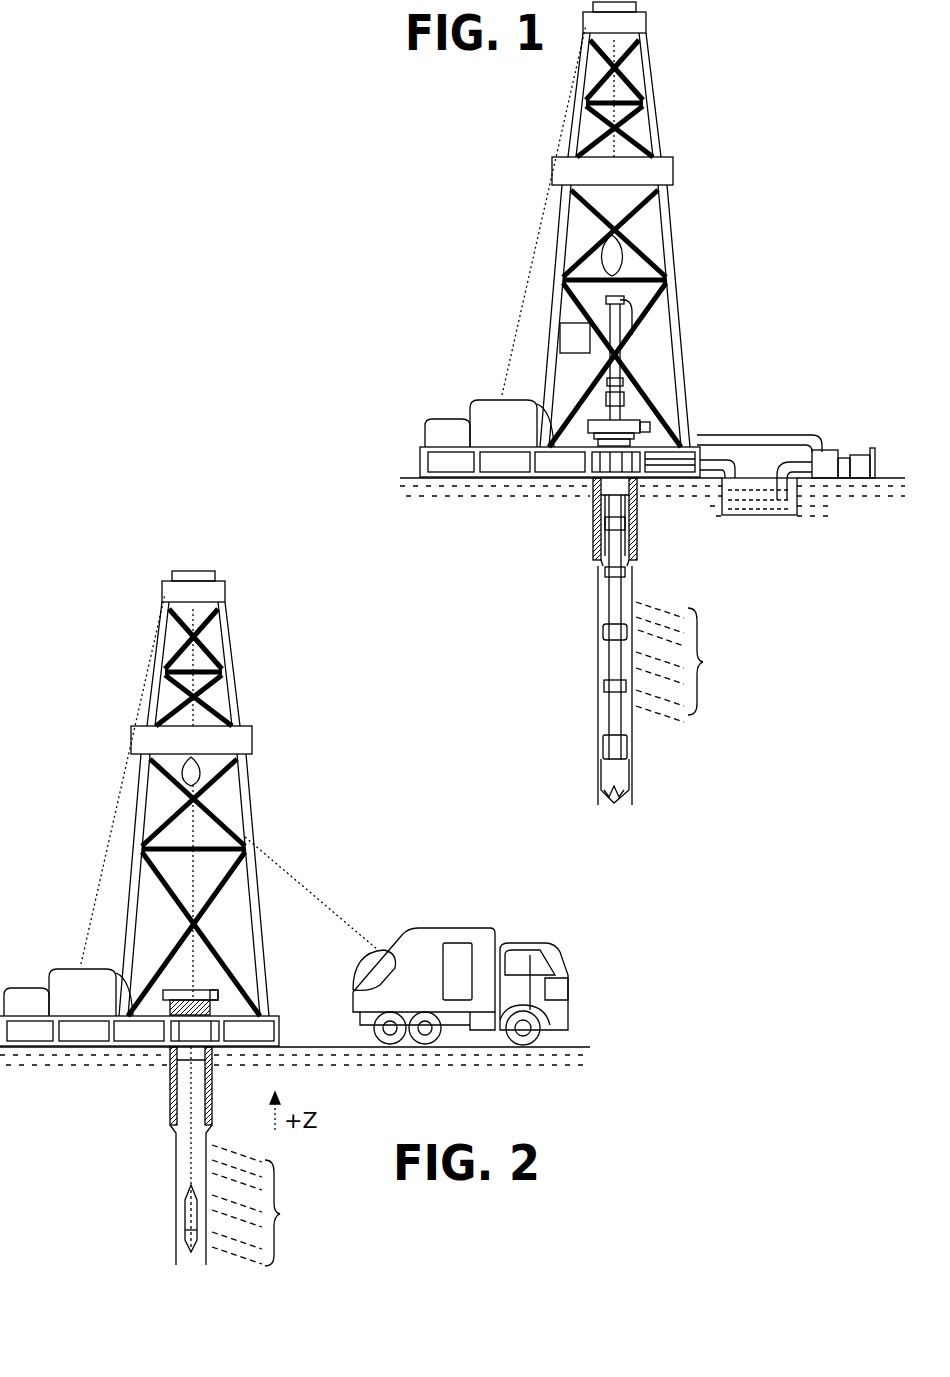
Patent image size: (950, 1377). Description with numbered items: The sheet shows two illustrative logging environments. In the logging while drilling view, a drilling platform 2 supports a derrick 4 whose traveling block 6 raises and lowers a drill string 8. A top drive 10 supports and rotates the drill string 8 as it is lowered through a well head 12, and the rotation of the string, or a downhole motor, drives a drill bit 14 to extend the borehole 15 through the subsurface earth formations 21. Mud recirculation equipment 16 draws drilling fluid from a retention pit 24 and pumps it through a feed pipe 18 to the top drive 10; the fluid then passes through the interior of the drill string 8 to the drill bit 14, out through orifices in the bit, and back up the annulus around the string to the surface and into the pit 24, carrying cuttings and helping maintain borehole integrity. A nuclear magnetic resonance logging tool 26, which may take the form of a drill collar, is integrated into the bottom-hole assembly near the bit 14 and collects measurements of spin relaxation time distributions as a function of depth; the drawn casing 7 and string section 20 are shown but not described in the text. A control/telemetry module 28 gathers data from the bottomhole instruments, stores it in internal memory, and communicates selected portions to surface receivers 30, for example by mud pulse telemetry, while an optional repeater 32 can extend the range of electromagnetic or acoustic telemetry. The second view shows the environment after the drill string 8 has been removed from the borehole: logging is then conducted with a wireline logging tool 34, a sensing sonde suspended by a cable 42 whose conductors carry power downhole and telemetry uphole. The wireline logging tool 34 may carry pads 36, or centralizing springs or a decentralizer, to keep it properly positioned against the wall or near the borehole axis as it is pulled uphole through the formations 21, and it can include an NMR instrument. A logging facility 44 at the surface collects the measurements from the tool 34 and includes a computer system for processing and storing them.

In FIG. 1, the drilling platform 2 is at (423, 450).
In FIG. 2, the drilling platform 2 is at (278, 1026).
In FIG. 1, the derrick 4 is at (652, 142).
In FIG. 2, the derrick 4 is at (260, 986).
In FIG. 1, the traveling block 6 is at (621, 262).
In FIG. 2, the traveling block 6 is at (205, 772).
In FIG. 1, the casing 7 is at (603, 576).
In FIG. 1, the drill string 8 is at (628, 604).
In FIG. 1, the top drive 10 is at (615, 322).
In FIG. 1, the well head 12 is at (636, 424).
In FIG. 2, the well head 12 is at (205, 992).
In FIG. 1, the drill bit 14 is at (621, 801).
In FIG. 1, the borehole 15 is at (601, 716).
In FIG. 1, the mud recirculation equipment 16 is at (830, 456).
In FIG. 1, the feed pipe 18 is at (772, 438).
In FIG. 1, the drill string 20 is at (604, 618).
In FIG. 1, the subsurface earth formations 21 is at (689, 662).
In FIG. 2, the subsurface earth formations 21 is at (266, 1205).
In FIG. 1, the retention pit 24 is at (735, 505).
In FIG. 1, the NMR logging tool 26 is at (607, 770).
In FIG. 1, the control/telemetry module 28 is at (605, 745).
In FIG. 1, the surface receivers 30 is at (620, 388).
In FIG. 1, the repeater 32 is at (604, 634).
In FIG. 2, the wireline logging tool 34 is at (189, 1207).
In FIG. 2, the pads 36 is at (184, 1226).
In FIG. 2, the cable 42 is at (250, 846).
In FIG. 2, the logging facility 44 is at (422, 930).